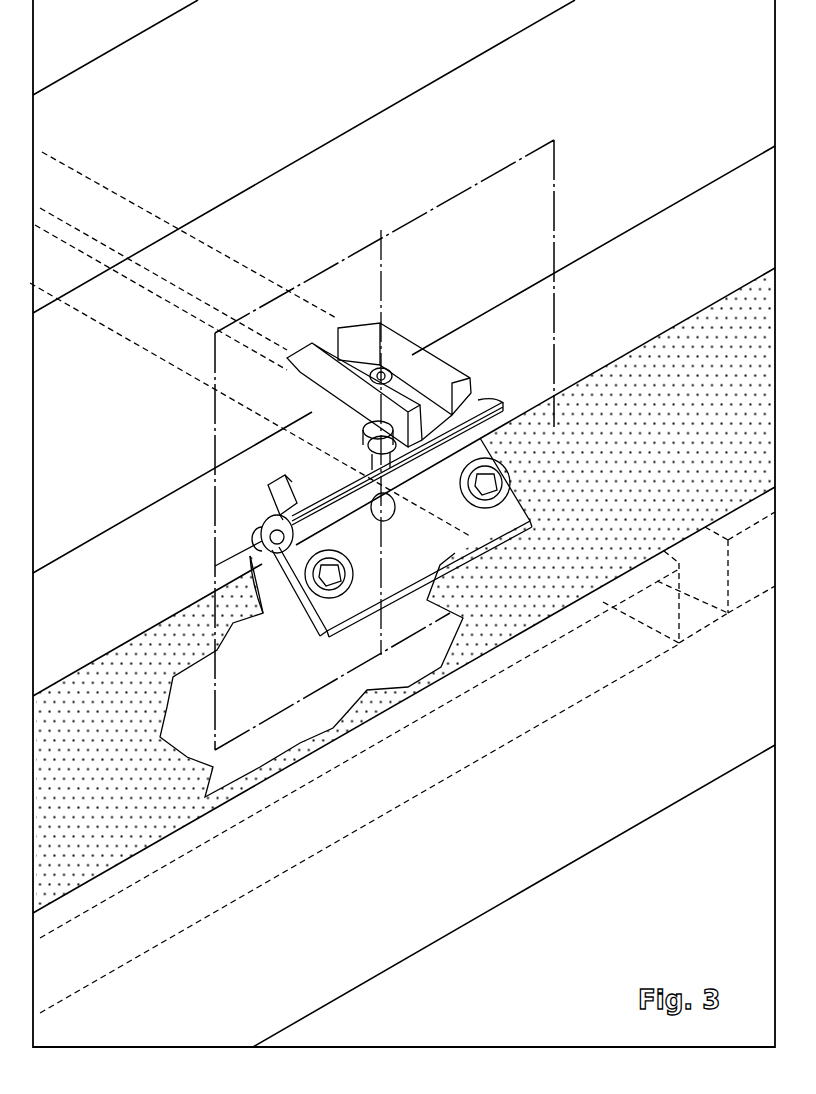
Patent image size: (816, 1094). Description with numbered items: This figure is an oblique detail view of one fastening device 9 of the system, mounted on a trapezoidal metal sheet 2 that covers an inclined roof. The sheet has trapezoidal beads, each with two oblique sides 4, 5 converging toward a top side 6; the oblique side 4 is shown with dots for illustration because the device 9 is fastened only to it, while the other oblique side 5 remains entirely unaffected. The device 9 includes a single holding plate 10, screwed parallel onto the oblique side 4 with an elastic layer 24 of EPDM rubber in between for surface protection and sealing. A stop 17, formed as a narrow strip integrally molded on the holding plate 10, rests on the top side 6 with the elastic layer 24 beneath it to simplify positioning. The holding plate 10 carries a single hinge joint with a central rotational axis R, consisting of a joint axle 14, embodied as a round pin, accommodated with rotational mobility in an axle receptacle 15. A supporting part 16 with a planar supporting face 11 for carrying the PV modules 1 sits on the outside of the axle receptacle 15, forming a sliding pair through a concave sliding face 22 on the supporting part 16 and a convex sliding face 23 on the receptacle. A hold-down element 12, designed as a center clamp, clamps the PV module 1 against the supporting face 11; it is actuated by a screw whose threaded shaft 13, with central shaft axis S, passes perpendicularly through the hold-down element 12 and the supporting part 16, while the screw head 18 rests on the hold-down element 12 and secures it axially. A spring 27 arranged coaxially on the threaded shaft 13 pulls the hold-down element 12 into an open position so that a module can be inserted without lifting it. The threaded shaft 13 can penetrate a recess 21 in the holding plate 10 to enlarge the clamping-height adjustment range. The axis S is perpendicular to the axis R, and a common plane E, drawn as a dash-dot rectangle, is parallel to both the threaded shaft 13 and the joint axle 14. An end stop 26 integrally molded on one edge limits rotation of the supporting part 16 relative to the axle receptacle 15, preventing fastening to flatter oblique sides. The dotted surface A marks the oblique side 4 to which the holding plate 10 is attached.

The PV module 1 is at (611, 685).
The trapezoidal metal sheet 2 is at (537, 884).
The oblique side 4 is at (118, 775).
The oblique side 5 is at (133, 503).
The top side 6 is at (118, 548).
The device 9 is at (445, 295).
The holding plate 10 is at (405, 567).
The supporting face 11 is at (270, 478).
The hold-down element 12 is at (453, 372).
The threaded shaft 13 is at (364, 432).
The joint axle 14 is at (262, 541).
The axle receptacle 15 is at (261, 525).
The supporting part 16 is at (270, 498).
The stop 17 is at (263, 613).
The screw head 18 is at (383, 370).
The recess 21 is at (395, 506).
The concave circular cylindrical sliding face 22 is at (300, 503).
The convex circular cylindrical sliding face 23 is at (397, 461).
The elastic layer 24 is at (303, 618).
The end stop 26 is at (500, 408).
The spring 27 is at (364, 420).
The common plane E is at (556, 163).
The central shaft axis S is at (384, 270).
The central rotational axis R is at (520, 390).
The support surface A is at (248, 773).